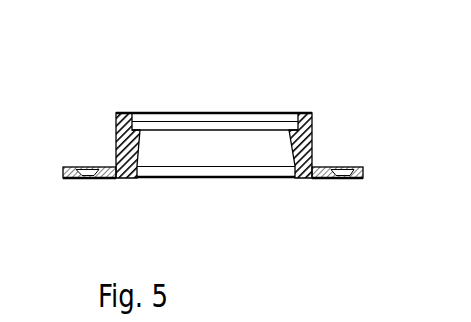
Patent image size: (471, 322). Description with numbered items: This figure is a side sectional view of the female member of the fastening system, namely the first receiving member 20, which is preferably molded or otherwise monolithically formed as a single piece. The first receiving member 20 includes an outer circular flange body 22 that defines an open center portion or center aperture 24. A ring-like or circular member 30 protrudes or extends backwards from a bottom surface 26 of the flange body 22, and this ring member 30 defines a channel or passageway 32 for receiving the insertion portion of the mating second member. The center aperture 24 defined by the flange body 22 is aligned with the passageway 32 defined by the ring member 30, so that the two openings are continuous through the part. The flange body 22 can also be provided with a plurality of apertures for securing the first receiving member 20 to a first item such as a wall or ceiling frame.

The first receiving member 20 is at (221, 109).
The outer circular flange body 22 is at (320, 166).
The center aperture 24 is at (210, 175).
The bottom surface 26 is at (73, 167).
The ring-like member 30 is at (115, 132).
The channel 32 is at (237, 145).